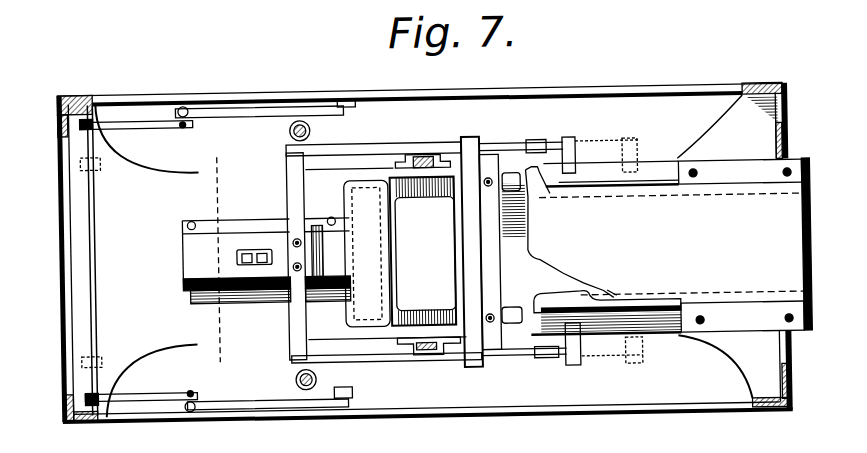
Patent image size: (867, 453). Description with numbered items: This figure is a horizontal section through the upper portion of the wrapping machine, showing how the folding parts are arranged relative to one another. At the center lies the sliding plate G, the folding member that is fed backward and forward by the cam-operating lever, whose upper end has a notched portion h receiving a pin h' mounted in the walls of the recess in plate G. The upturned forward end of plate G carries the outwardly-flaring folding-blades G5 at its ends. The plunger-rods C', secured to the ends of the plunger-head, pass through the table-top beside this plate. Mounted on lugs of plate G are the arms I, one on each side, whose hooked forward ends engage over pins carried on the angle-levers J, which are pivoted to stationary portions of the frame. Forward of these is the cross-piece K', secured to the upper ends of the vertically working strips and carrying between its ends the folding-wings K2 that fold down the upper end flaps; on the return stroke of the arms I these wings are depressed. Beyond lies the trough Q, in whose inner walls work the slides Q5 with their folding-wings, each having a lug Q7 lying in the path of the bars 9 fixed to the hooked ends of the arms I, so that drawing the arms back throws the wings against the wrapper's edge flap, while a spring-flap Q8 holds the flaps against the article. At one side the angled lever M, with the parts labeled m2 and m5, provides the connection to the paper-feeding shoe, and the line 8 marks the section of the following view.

The angled lever M is at (253, 116).
The lever m2 is at (158, 399).
The bar m5 is at (95, 240).
The section line 8 8 is at (217, 260).
The notched portion h is at (266, 260).
The pin h' is at (256, 233).
The sliding plate G is at (384, 252).
The outwardly-flaring folding-blades G5 is at (358, 375).
The plunger-rods C' is at (425, 234).
The arms I is at (457, 149).
The cross-piece K' is at (482, 252).
The folding-wings K2 is at (509, 316).
The angle-levers J is at (498, 361).
The bars 9 is at (570, 161).
The trough Q is at (666, 184).
The slides Q5 is at (599, 310).
The lug Q7 is at (511, 381).
The spring-flap Q8 is at (606, 300).